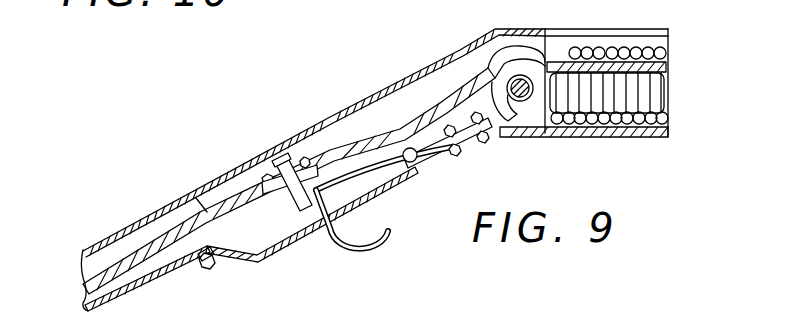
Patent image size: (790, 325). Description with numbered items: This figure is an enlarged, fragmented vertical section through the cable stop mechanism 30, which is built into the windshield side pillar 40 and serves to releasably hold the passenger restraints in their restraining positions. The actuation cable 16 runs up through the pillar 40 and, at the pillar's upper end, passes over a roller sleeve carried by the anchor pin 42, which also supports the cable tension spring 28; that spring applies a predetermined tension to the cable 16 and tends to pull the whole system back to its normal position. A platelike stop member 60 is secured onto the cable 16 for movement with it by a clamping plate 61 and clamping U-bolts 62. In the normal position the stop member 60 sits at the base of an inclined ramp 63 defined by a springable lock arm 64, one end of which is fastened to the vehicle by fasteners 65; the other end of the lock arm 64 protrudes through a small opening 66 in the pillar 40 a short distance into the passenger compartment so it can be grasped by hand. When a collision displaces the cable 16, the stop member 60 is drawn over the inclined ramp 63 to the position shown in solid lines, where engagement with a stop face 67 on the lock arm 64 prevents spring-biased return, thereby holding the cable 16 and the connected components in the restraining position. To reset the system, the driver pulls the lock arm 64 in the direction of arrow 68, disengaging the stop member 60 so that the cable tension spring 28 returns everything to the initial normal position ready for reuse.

The actuation cable 16 is at (650, 68).
The cable tension spring 28 is at (621, 49).
The cable stop mechanism 30 is at (233, 167).
The windshield side pillar 40 is at (458, 53).
The anchor pin 42 is at (525, 102).
The stop member 60 is at (280, 156).
The clamping plate 61 is at (308, 163).
The clamping U-bolts 62 is at (312, 214).
The inclined ramp 63 is at (425, 161).
The springable lock arm 64 is at (390, 174).
The fasteners 65 is at (481, 145).
The small opening 66 is at (334, 230).
The stop face 67 is at (314, 224).
The arrow 68 is at (387, 287).